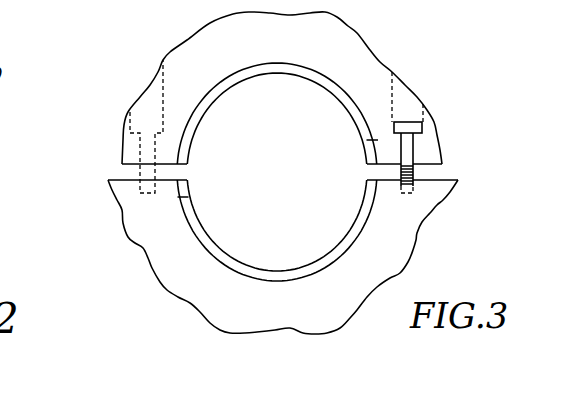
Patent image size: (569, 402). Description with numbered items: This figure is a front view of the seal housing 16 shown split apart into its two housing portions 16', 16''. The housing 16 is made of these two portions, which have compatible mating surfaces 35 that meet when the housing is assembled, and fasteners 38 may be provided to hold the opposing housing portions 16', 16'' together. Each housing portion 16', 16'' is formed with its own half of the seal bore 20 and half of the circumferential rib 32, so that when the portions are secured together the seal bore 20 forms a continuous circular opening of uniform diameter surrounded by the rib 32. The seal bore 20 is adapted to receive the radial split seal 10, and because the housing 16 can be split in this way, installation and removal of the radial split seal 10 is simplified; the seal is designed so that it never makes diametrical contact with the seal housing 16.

The radial split seal 10 is at (446, 63).
The seal housing 16 is at (251, 185).
The housing portion 16' is at (170, 124).
The housing portion 16'' is at (283, 245).
The seal bore 20 is at (188, 197).
The circumferential rib 32 is at (322, 88).
The mating surfaces 35 is at (422, 158).
The fasteners 38 is at (422, 128).